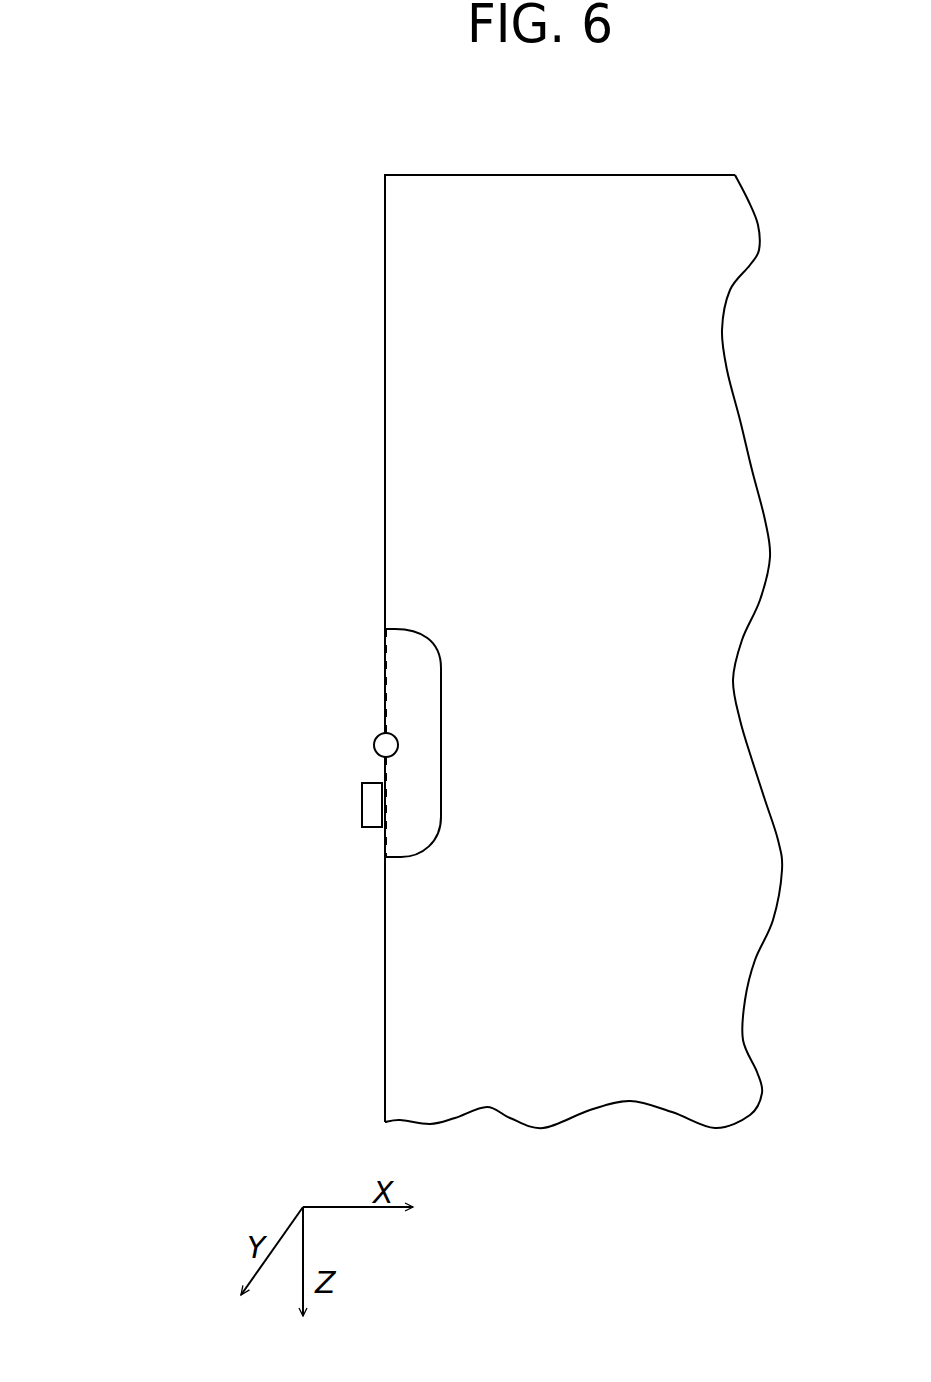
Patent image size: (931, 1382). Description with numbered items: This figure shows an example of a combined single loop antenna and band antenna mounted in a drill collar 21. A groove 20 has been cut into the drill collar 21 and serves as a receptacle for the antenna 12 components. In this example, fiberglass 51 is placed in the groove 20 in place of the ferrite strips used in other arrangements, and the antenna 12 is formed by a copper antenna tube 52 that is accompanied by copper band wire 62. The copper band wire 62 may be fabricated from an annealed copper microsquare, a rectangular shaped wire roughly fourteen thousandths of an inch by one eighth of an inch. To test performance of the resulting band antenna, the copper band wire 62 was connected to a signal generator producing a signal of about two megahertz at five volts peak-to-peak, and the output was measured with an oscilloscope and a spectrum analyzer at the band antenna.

The drill collar 21 is at (403, 211).
The groove 20 is at (393, 628).
The antenna 12 is at (353, 745).
The fiberglass 51 is at (415, 652).
The antenna tube 52 is at (374, 742).
The copper band wire 62 is at (226, 879).